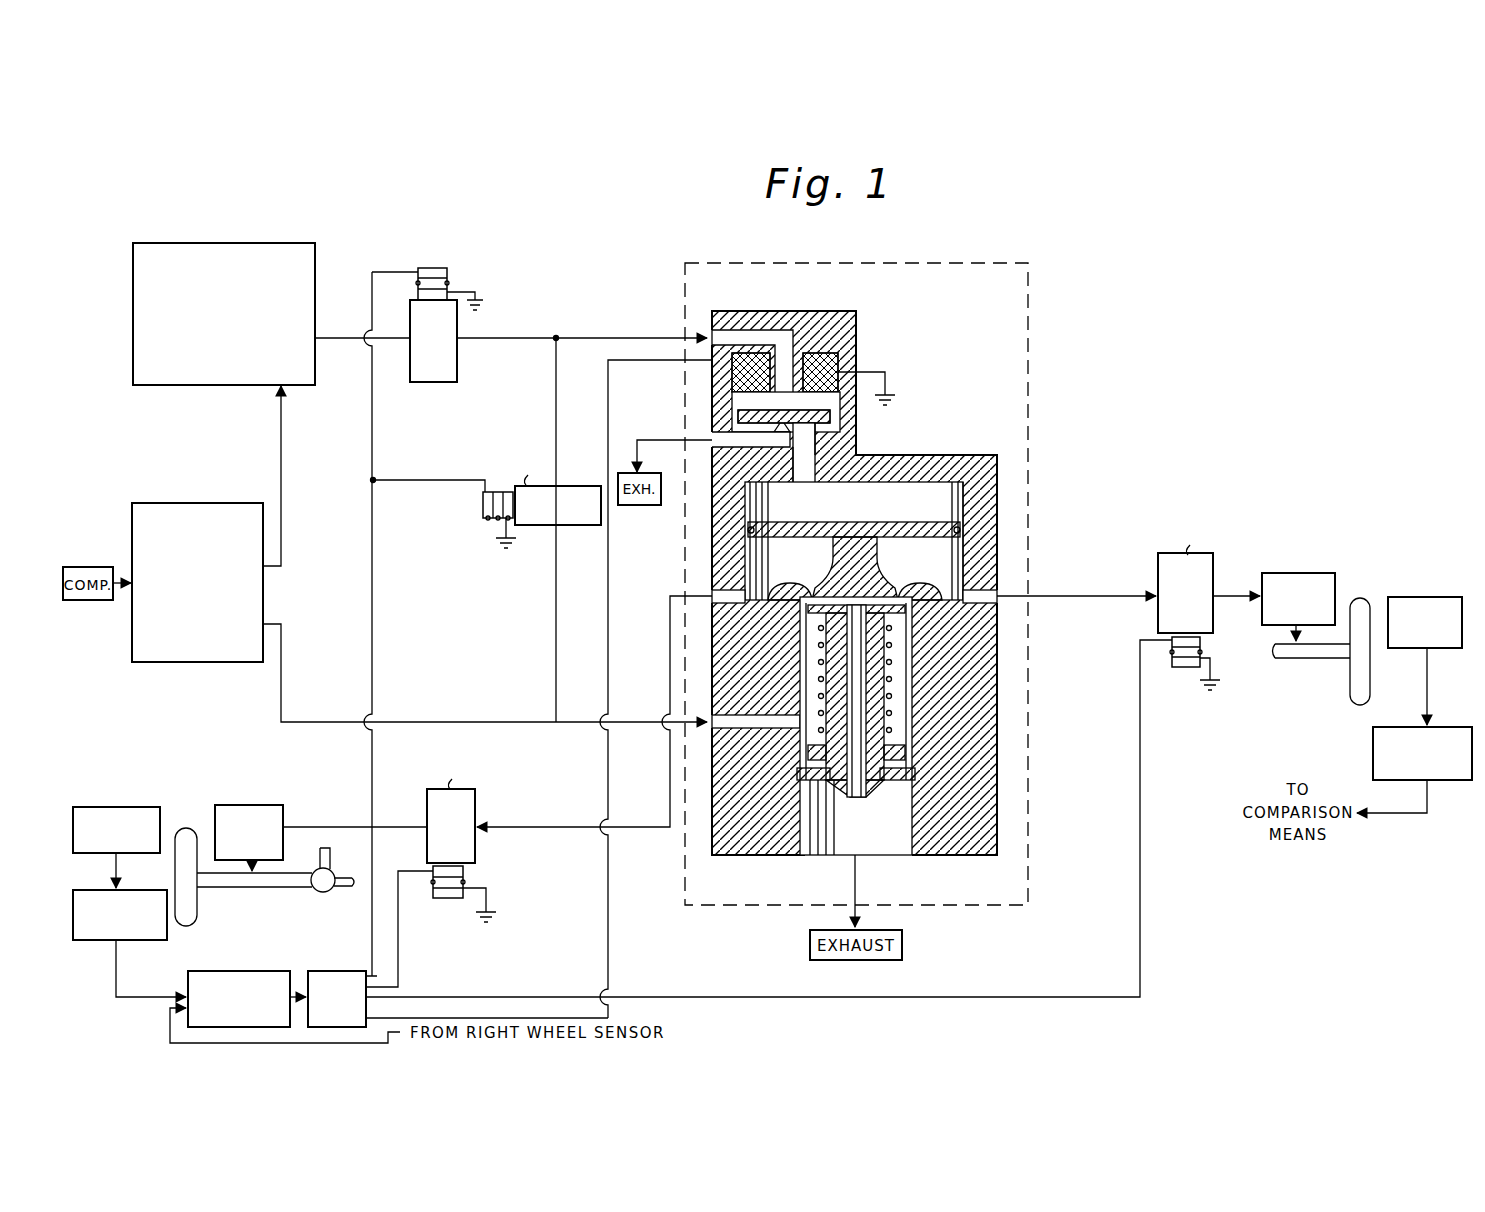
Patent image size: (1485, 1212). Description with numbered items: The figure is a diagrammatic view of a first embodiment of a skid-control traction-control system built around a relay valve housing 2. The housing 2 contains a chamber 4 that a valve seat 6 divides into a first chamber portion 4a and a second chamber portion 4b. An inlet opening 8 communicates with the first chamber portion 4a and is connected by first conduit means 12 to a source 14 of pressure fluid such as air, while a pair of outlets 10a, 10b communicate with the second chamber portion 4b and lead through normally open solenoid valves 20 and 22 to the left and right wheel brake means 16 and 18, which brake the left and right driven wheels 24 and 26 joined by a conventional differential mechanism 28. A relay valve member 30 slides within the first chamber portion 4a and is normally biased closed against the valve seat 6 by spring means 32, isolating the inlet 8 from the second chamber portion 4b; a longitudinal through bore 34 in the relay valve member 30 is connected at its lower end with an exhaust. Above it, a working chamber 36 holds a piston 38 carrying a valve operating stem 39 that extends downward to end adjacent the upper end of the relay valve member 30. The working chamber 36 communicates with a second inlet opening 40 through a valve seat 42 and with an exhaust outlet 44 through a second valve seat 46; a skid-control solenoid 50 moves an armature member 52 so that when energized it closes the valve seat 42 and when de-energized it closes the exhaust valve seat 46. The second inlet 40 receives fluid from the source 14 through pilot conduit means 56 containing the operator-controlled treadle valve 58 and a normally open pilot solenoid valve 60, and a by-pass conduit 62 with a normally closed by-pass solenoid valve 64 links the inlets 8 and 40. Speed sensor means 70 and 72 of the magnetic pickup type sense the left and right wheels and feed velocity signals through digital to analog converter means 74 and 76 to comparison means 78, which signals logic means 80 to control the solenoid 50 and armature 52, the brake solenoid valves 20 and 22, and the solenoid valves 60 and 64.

The relay valve housing 2 is at (1000, 800).
The chamber 4 is at (892, 714).
The first chamber portion 4a is at (895, 682).
The second chamber portion 4b is at (963, 566).
The valve seat 6 is at (894, 578).
The inlet opening 8 is at (761, 714).
The outlet 10a is at (739, 604).
The outlet 10b is at (979, 604).
The first conduit means 12 is at (339, 720).
The source of pressure fluid 14 is at (140, 644).
The left wheel brake means 16 is at (272, 805).
The right wheel brake means 18 is at (1298, 571).
The normally open solenoid valve 20 is at (478, 858).
The normally open solenoid valve 22 is at (1160, 570).
The left driven wheel 24 is at (184, 832).
The right driven wheel 26 is at (1350, 699).
The differential mechanism 28 is at (320, 892).
The relay valve member 30 is at (867, 728).
The spring means 32 is at (820, 672).
The longitudinal through bore 34 is at (864, 796).
The working chamber 36 is at (927, 511).
The piston 38 is at (795, 521).
The valve operating stem 39 is at (832, 561).
The second inlet opening 40 is at (728, 328).
The valve seat 42 is at (740, 412).
The exhaust outlet 44 is at (712, 438).
The second valve seat 46 is at (794, 447).
The skid-control solenoid 50 is at (852, 372).
The armature member 52 is at (848, 430).
The pilot conduit means 56 is at (511, 342).
The operator-controlled treadle valve 58 is at (223, 244).
The normally open pilot solenoid valve 60 is at (425, 385).
The by-pass conduit 62 is at (555, 396).
The normally closed by-pass solenoid valve 64 is at (574, 530).
The speed sensor means 70 is at (111, 806).
The speed sensor means 72 is at (1422, 596).
The digital to analog converter means 74 is at (132, 942).
The digital to analog converter means 76 is at (1410, 727).
The comparison means 78 is at (234, 971).
The logic means 80 is at (332, 970).